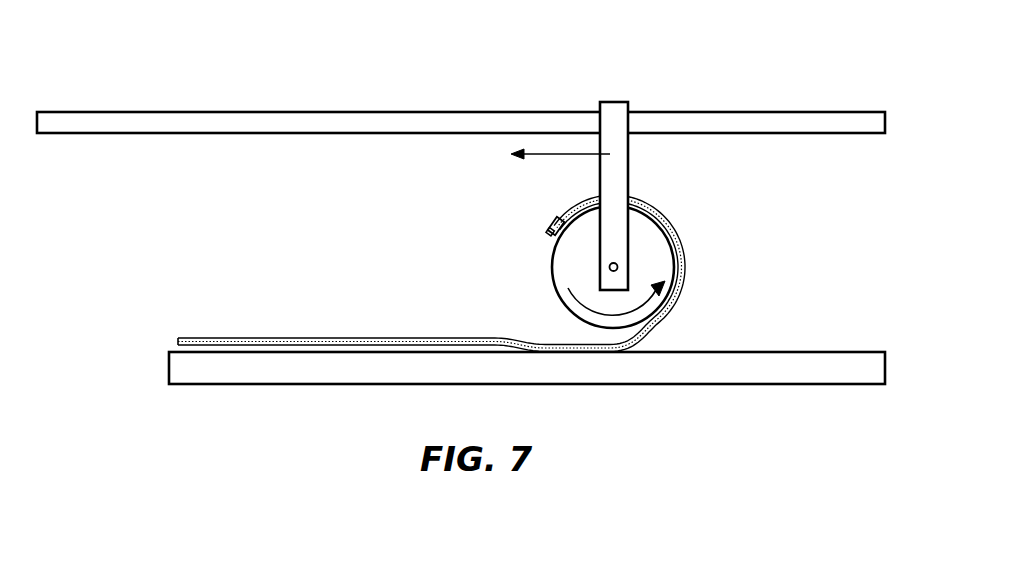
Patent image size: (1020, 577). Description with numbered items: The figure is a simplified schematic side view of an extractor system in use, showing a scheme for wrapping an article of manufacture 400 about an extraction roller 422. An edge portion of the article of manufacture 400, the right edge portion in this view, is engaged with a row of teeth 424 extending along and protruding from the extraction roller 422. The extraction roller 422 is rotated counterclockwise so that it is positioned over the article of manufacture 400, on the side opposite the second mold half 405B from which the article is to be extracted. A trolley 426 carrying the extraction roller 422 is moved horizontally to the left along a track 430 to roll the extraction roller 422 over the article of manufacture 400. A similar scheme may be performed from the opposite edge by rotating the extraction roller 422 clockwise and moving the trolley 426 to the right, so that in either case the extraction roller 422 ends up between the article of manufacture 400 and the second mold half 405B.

The article of manufacture 400 is at (329, 338).
The second mold half 405B is at (763, 368).
The extraction roller 422 is at (655, 248).
The row of teeth 424 is at (548, 223).
The trolley 426 is at (613, 166).
The track 430 is at (693, 122).